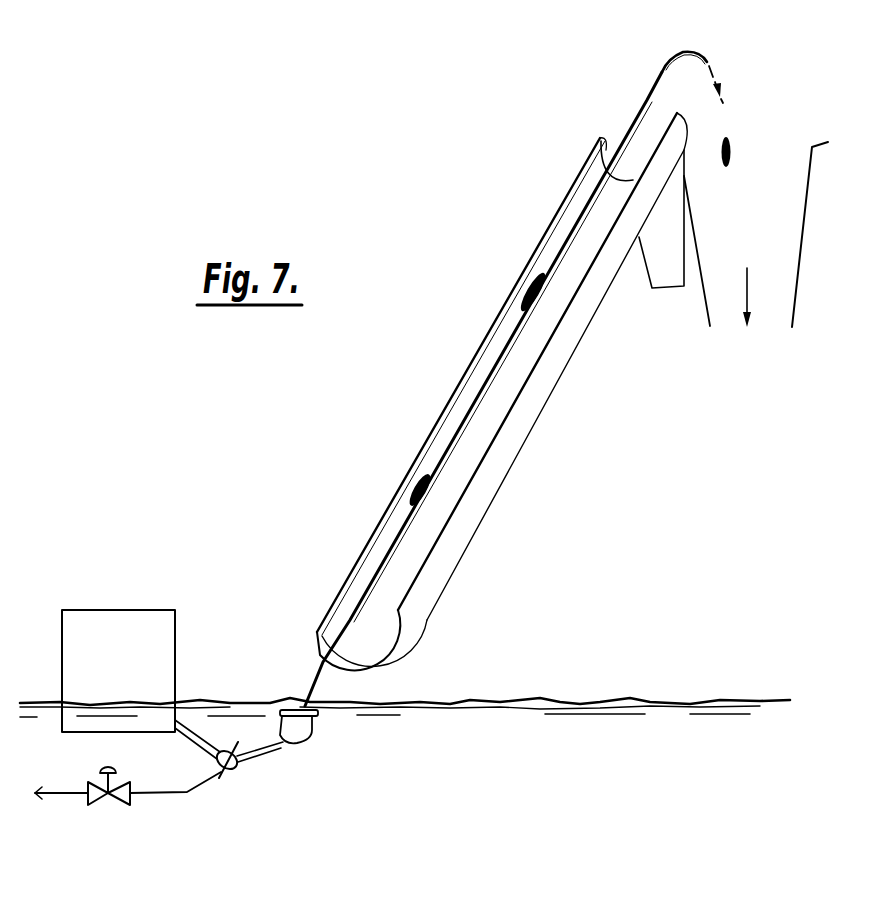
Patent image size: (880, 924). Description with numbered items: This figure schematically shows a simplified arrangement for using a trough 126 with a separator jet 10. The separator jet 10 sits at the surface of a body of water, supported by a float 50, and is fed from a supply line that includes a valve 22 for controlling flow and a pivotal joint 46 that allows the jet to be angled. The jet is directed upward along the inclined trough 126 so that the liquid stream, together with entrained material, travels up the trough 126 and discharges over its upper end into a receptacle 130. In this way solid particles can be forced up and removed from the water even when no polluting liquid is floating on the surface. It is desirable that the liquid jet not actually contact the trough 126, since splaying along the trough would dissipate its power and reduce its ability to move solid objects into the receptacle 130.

The trough 126 is at (487, 487).
The receptacle 130 is at (778, 270).
The float 50 is at (113, 622).
The separator jet 10 is at (318, 737).
The pivotal joint 46 is at (221, 771).
The valve 22 is at (120, 806).